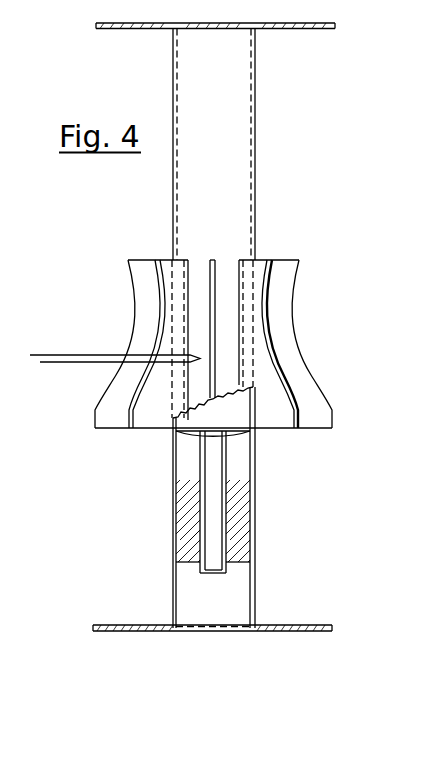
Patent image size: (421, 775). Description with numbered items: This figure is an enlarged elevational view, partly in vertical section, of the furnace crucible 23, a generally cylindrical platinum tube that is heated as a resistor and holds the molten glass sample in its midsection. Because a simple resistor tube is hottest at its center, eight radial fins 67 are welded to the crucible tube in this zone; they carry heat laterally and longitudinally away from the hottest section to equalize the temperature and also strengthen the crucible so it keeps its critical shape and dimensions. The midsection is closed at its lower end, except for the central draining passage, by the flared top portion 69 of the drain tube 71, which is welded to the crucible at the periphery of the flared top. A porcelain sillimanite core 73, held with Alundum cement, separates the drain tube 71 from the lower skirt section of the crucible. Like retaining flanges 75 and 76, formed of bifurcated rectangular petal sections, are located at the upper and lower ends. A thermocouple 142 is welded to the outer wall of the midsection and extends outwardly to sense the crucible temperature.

The retaining flange 75 is at (297, 31).
The crucible 23 is at (257, 128).
The radial fins 67 is at (139, 392).
The thermocouple 142 is at (94, 362).
The porcelain sillimanite core 73 is at (183, 470).
The flared top portion 69 is at (235, 435).
The drain tube 71 is at (227, 572).
The retaining flange 76 is at (137, 625).